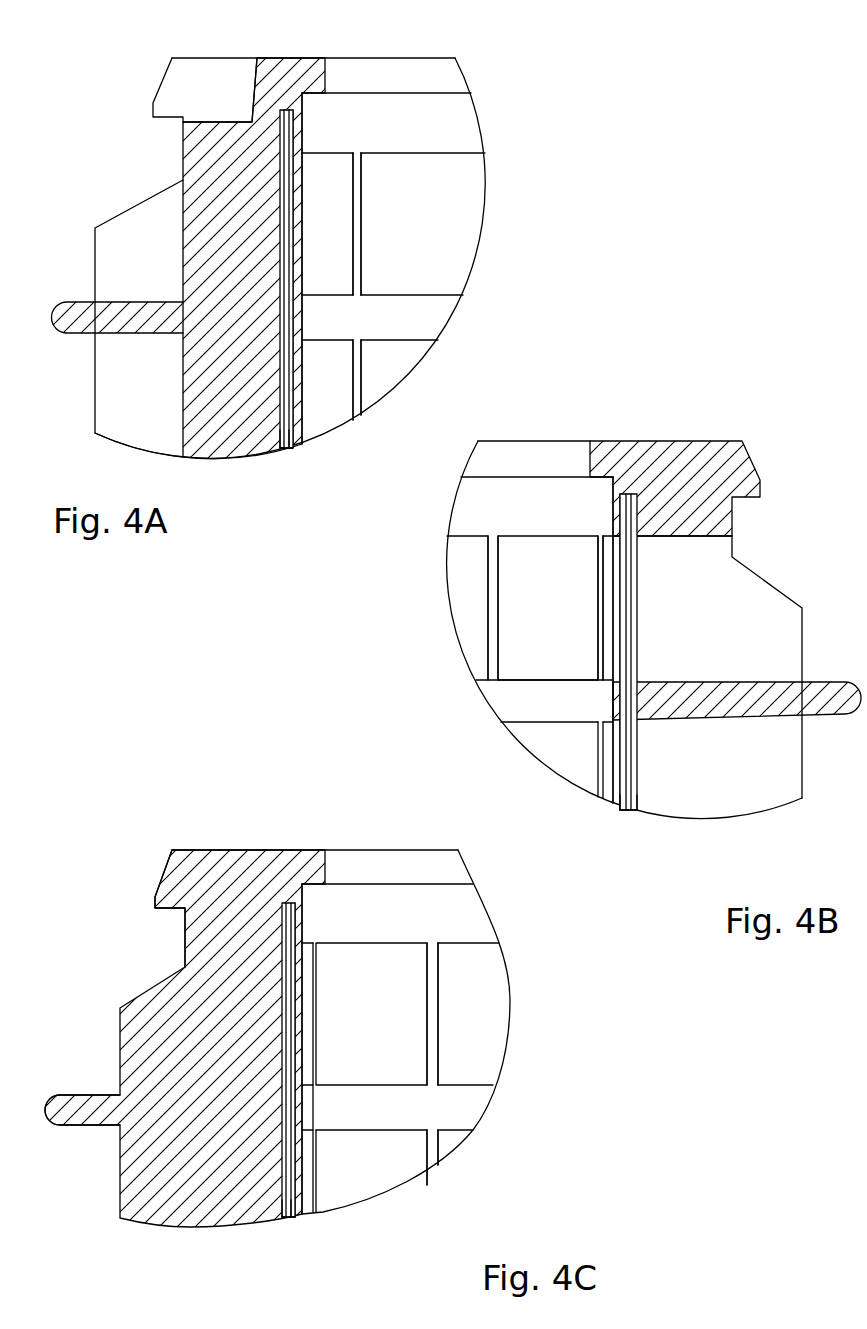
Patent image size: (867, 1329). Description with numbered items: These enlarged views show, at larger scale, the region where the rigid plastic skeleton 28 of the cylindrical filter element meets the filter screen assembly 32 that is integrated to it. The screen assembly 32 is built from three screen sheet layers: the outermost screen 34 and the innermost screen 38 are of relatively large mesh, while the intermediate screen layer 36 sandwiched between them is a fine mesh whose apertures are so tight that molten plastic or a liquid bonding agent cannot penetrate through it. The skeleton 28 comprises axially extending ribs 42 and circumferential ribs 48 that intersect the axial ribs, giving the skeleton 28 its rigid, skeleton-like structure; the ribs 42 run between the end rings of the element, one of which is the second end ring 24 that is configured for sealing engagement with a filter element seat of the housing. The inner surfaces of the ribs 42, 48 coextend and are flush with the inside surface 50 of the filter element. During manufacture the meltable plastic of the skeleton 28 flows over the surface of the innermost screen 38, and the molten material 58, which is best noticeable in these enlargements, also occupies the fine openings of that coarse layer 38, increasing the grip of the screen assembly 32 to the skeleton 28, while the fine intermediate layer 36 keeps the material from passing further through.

In FIG. 4A, the second end ring 24 is at (283, 58).
In FIG. 4B, the second end ring 24 is at (738, 480).
In FIG. 4C, the second end ring 24 is at (190, 892).
In FIG. 4A, the skeleton 28 is at (290, 258).
In FIG. 4B, the skeleton 28 is at (548, 773).
In FIG. 4C, the skeleton 28 is at (168, 1203).
In FIG. 4A, the filter screen assembly 32 is at (467, 217).
In FIG. 4B, the filter screen assembly 32 is at (750, 770).
In FIG. 4C, the filter screen assembly 32 is at (463, 1027).
In FIG. 4A, the outermost screen 34 is at (280, 448).
In FIG. 4C, the outermost screen 34 is at (281, 1218).
In FIG. 4A, the intermediate screen layer 36 is at (283, 448).
In FIG. 4B, the intermediate screen layer 36 is at (630, 812).
In FIG. 4C, the intermediate screen layer 36 is at (288, 1218).
In FIG. 4A, the innermost screen 38 is at (288, 448).
In FIG. 4B, the innermost screen 38 is at (625, 808).
In FIG. 4C, the innermost screen 38 is at (292, 1216).
In FIG. 4A, the axially extending ribs 42 is at (362, 365).
In FIG. 4B, the axially extending ribs 42 is at (487, 598).
In FIG. 4C, the axially extending ribs 42 is at (440, 1140).
In FIG. 4A, the circumferential ribs 48 is at (92, 327).
In FIG. 4B, the circumferential ribs 48 is at (827, 693).
In FIG. 4C, the circumferential ribs 48 is at (82, 1110).
In FIG. 4A, the inside surface 50 is at (293, 110).
In FIG. 4B, the inside surface 50 is at (628, 652).
In FIG. 4C, the inside surface 50 is at (295, 903).
In FIG. 4A, the molten material 58 is at (300, 402).
In FIG. 4B, the molten material 58 is at (627, 493).
In FIG. 4C, the molten material 58 is at (298, 1050).